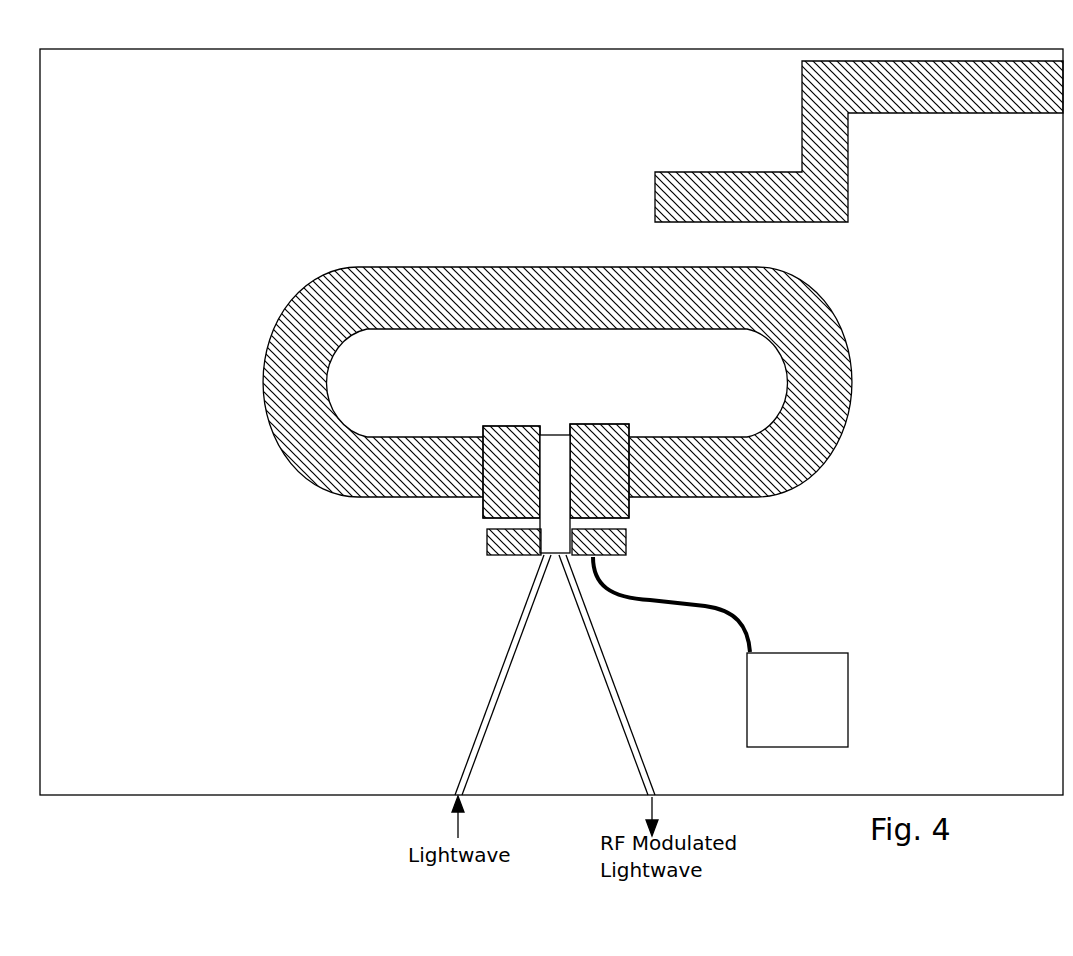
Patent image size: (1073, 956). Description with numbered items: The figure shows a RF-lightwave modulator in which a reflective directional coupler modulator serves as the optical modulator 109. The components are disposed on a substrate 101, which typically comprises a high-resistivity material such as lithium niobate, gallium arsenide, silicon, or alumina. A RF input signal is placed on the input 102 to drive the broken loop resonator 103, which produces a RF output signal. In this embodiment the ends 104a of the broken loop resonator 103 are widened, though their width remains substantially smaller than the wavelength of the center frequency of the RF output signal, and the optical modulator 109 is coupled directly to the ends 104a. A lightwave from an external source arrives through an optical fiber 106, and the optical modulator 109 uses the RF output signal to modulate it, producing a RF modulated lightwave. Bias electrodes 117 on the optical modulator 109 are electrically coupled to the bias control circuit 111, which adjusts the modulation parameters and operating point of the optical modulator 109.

The substrate 101 is at (733, 49).
The input 102 is at (843, 160).
The broken loop resonator 103 is at (465, 268).
The ends 104a is at (507, 424).
The optical modulator 109 is at (553, 433).
The bias electrodes 117 is at (487, 537).
The optical fiber 106 is at (493, 685).
The bias control circuit 111 is at (848, 680).